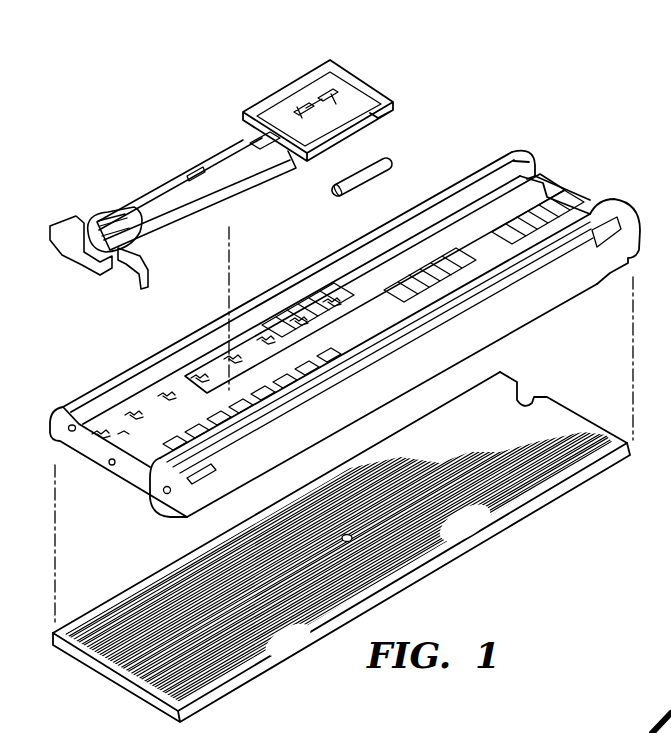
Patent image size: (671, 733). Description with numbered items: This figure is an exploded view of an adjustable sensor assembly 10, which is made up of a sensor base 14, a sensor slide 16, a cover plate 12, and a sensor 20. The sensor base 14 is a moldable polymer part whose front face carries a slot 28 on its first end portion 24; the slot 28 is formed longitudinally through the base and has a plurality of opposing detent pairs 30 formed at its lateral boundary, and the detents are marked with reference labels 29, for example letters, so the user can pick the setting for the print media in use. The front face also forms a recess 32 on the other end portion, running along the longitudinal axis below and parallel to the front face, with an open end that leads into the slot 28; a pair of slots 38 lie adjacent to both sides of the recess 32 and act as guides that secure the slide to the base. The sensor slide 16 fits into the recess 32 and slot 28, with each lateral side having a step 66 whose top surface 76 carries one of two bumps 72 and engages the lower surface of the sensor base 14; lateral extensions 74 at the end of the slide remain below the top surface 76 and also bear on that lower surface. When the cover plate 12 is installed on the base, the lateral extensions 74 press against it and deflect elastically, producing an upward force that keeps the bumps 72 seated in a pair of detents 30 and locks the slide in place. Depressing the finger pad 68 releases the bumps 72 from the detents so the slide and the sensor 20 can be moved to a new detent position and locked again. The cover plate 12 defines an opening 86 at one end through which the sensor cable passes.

The adjustable sensor assembly 10 is at (541, 108).
The cover plate 12 is at (482, 436).
The sensor base 14 is at (484, 337).
The sensor slide 16 is at (358, 91).
The sensor 20 is at (388, 168).
The first end portion 24 is at (648, 730).
The slot 28 is at (163, 423).
The reference labels 29 is at (291, 330).
The detent pairs 30 is at (150, 447).
The recess 32 is at (485, 245).
The slots 38 is at (535, 158).
The step 66 is at (232, 186).
The finger pad 68 is at (85, 258).
The bumps 72 is at (123, 242).
The lateral extensions 74 is at (137, 282).
The top surface 76 is at (258, 146).
The opening 86 is at (531, 402).